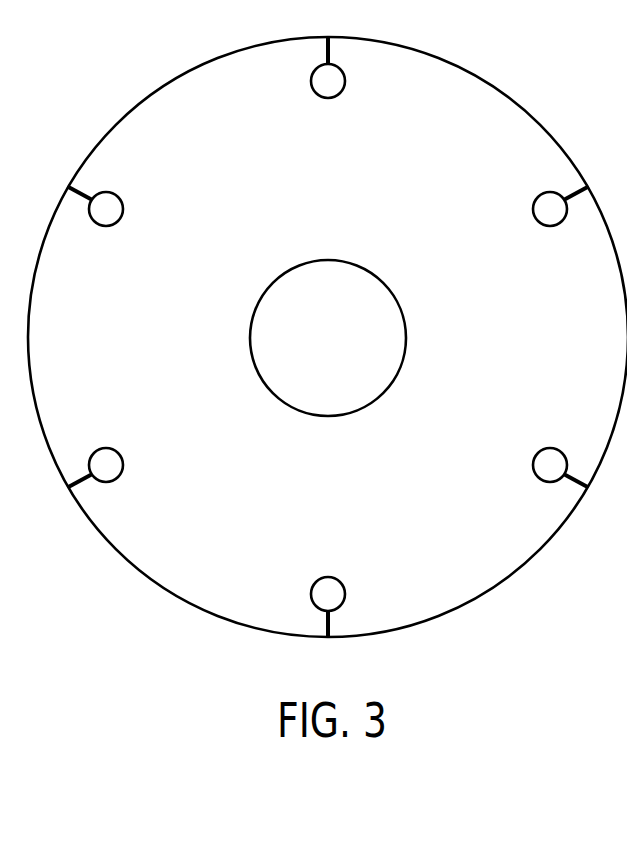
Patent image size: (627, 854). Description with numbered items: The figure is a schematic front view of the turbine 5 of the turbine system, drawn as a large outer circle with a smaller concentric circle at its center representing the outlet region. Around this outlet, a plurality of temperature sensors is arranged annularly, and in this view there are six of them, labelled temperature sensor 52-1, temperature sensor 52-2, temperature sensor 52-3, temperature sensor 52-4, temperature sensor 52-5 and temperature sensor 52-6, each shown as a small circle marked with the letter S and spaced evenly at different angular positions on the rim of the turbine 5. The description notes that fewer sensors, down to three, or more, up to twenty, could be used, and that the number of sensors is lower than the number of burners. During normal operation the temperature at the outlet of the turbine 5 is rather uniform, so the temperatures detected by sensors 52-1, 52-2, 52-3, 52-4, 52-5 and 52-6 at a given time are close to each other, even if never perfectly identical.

The turbine 5 is at (60, 111).
The temperature sensor 52-1 is at (328, 98).
The temperature sensor 52-2 is at (550, 226).
The temperature sensor 52-3 is at (550, 448).
The temperature sensor 52-4 is at (328, 577).
The temperature sensor 52-5 is at (106, 448).
The temperature sensor 52-6 is at (106, 226).